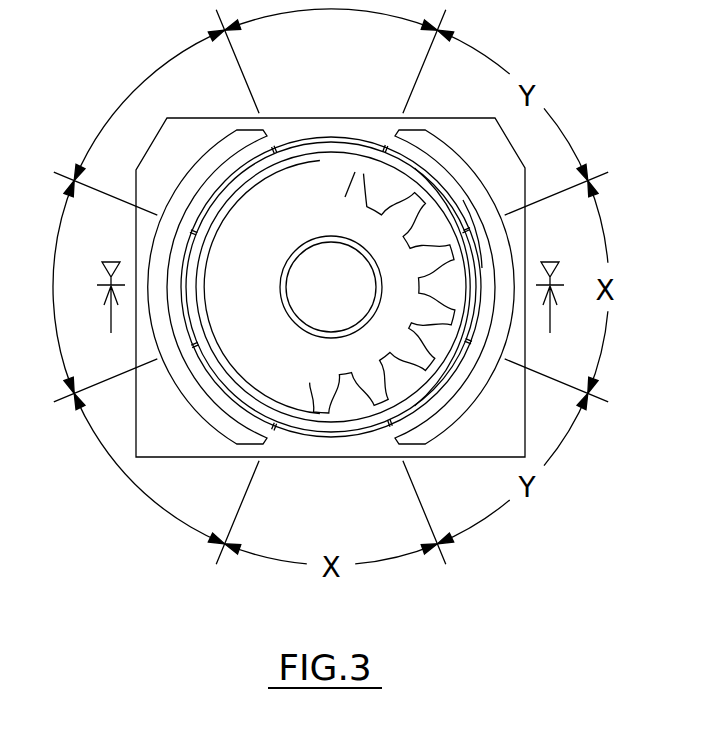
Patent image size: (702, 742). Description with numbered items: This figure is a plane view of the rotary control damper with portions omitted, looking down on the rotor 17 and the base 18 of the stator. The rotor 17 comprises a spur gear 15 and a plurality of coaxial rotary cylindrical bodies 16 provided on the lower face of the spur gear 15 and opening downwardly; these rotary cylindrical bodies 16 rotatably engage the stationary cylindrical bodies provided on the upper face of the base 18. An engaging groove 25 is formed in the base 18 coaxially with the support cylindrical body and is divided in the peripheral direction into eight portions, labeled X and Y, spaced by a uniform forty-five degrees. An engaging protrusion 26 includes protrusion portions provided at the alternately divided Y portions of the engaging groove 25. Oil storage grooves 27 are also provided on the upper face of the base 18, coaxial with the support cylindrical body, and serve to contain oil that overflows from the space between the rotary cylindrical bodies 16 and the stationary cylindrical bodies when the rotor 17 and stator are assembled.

The spur gear 15 is at (349, 198).
The rotary cylindrical bodies 16 is at (350, 432).
The rotor 17 is at (298, 183).
The base 18 is at (465, 434).
The engaging groove 25 is at (263, 428).
The engaging protrusion 26 is at (486, 266).
The oil storage grooves 27 is at (222, 418).